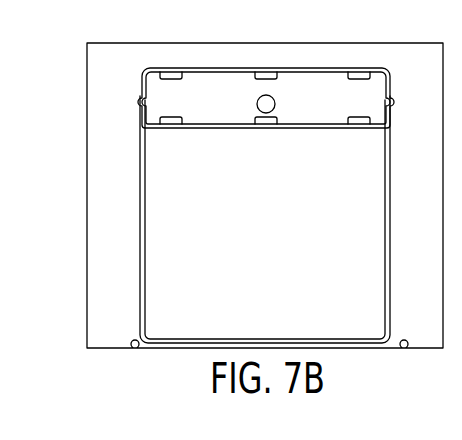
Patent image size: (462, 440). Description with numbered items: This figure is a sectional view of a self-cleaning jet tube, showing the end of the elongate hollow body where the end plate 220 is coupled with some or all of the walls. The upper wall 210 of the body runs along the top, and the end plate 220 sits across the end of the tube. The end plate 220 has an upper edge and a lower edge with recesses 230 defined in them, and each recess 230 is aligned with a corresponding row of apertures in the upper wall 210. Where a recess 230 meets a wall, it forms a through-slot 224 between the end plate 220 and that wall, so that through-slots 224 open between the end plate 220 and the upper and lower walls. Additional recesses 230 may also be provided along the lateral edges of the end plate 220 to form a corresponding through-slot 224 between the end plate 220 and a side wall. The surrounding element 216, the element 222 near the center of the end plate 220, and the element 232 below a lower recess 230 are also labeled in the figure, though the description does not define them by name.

The bracket 210 is at (213, 68).
The housing wall 216 is at (87, 256).
The channel portion 220 is at (315, 88).
The hole 222 is at (268, 96).
The tab 224 is at (365, 76).
The tabs 230 is at (158, 72).
The tab 232 is at (172, 128).